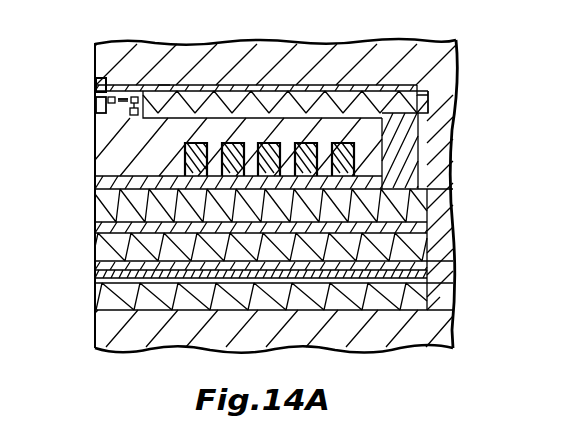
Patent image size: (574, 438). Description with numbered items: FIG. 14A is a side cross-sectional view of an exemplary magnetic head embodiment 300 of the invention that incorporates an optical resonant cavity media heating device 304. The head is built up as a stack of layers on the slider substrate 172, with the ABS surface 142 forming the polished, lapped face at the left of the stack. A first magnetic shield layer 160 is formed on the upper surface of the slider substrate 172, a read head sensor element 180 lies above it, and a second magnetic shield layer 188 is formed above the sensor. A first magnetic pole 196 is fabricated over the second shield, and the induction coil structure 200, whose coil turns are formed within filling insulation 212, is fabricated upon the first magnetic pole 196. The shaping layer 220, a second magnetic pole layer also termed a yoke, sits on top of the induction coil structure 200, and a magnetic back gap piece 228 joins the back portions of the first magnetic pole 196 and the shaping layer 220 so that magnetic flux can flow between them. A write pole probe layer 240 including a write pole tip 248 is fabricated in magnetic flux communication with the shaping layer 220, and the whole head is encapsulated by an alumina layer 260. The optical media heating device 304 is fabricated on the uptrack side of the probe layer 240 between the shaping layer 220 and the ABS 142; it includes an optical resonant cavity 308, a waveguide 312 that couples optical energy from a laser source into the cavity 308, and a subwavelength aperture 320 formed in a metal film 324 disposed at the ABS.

The magnetic head embodiment 300 is at (88, 46).
The alumina layer 260 is at (348, 50).
The write pole tip 248 is at (97, 82).
The write pole probe layer 240 is at (268, 44).
The shaping layer 220 is at (417, 105).
The induction coil structure 200 is at (411, 142).
The filling insulation 212 is at (147, 155).
The magnetic back gap piece 228 is at (408, 173).
The first magnetic pole 196 is at (415, 206).
The second magnetic shield layer 188 is at (418, 246).
The read head sensor element 180 is at (95, 272).
The first magnetic shield layer 160 is at (412, 292).
The slider substrate 172 is at (432, 330).
The ABS surface 142 is at (95, 210).
The metal film 324 is at (96, 111).
The subwavelength aperture 320 is at (99, 100).
The optical resonant cavity media heating device 304 is at (116, 117).
The optical resonant cavity 308 is at (125, 94).
The waveguide 312 is at (164, 84).